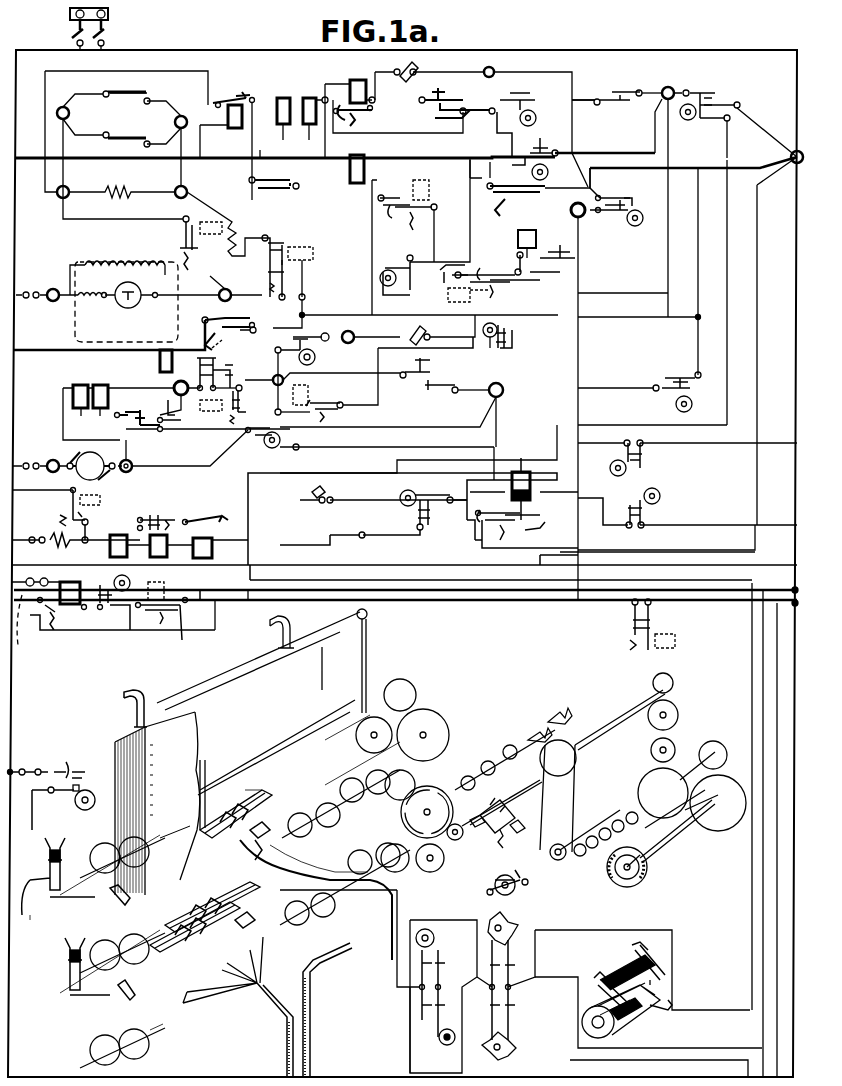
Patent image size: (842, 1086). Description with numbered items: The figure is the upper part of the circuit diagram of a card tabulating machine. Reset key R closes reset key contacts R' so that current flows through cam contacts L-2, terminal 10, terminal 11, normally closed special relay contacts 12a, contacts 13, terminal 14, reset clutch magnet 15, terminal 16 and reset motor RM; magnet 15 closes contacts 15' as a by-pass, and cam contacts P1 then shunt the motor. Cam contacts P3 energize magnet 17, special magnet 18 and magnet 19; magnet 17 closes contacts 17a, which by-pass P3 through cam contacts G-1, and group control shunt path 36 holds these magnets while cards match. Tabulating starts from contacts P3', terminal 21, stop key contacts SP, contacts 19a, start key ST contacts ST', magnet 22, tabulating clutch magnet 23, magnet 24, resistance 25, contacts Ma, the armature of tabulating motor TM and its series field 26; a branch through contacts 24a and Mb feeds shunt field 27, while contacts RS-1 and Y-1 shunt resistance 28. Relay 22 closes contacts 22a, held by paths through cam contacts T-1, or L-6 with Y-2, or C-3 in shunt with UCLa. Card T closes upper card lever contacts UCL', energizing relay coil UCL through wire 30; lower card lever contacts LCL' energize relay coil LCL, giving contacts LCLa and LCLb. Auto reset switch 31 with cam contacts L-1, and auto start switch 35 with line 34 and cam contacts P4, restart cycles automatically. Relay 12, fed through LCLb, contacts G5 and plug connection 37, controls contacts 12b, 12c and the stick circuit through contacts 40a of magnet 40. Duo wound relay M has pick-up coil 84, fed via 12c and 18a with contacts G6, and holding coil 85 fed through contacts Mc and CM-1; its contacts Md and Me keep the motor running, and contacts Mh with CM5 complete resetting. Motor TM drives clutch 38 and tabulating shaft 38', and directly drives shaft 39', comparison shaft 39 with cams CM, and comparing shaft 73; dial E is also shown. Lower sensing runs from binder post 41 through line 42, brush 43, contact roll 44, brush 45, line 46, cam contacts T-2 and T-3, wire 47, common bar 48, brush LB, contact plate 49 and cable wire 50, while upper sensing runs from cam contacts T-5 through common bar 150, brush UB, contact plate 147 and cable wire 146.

The contacts Y-1 is at (140, 100).
The contacts RS-1 is at (140, 118).
The resistance 28 is at (118, 186).
The resistance 25 is at (240, 232).
The duo wound relay M is at (195, 210).
The special normally closed relay contacts Mb is at (183, 247).
The magnet 24 is at (230, 124).
The contacts 24a is at (222, 98).
The special relay coil LCL is at (358, 377).
The tabulating clutch magnet 23 is at (300, 120).
The magnet 22 is at (365, 85).
The armature contacts 22a is at (345, 122).
The auto start switch 35 is at (410, 62).
The start key ST is at (447, 96).
The start key contacts ST' is at (445, 117).
The cam contacts L-6 is at (510, 103).
The cam contacts T-1 is at (525, 145).
The lower card lever contacts LCL' is at (307, 594).
The contacts Y-2 is at (610, 92).
The terminal 21 is at (668, 88).
The contacts P3' is at (714, 97).
The cam contacts P3 is at (738, 130).
The cam contacts P4 is at (630, 200).
The binder post 41 is at (583, 215).
The line 42 is at (590, 283).
The wire 30 is at (608, 310).
The cam contacts L2 L-2 is at (688, 372).
The comparison cam contacts CM-1 is at (645, 455).
The cam contacts C-6 G6 is at (630, 492).
The special relay coil UCL is at (272, 275).
The upper card lever relay contacts UCLa is at (400, 220).
The line 34 is at (432, 245).
The cam contacts C-3 is at (403, 262).
The contacts 19a is at (440, 280).
The magnet 19 is at (100, 555).
The contacts LCLa is at (485, 285).
The stop key contacts SP is at (548, 280).
The special normally closed relay contacts Ma is at (290, 237).
The contacts Md is at (305, 280).
The relay contacts Mh is at (335, 412).
The shunt field 27 is at (108, 272).
The tabulating motor TM is at (488, 888).
The series field 26 is at (93, 302).
The contacts Me is at (205, 278).
The upper card lever contacts UCL' is at (133, 609).
The cam contacts L1 L-1 is at (290, 343).
The reset clutch magnet 15 is at (111, 402).
The terminal 14 is at (175, 375).
The contacts 13 is at (185, 388).
The terminal 11 is at (276, 378).
The special relay contacts 12a is at (256, 404).
The special relay coil 12 is at (205, 418).
The contacts 15' is at (180, 427).
The reset motor RM is at (91, 466).
The terminal 16 is at (132, 460).
The cam contacts P1 is at (280, 438).
The contacts 12c is at (60, 520).
The special magnet 18 is at (175, 545).
The magnet 17 is at (212, 552).
The contacts 18a is at (150, 510).
The contacts 17a is at (232, 502).
The auto reset switch 31 is at (400, 330).
The reset key R is at (425, 357).
The reset key contacts R' is at (439, 394).
The comparison cam contacts CM-5 CM5 is at (492, 350).
The terminal 10 is at (502, 385).
The holding coil 85 is at (518, 470).
The contacts Mc is at (498, 526).
The pick-up coil 84 is at (548, 525).
The cam contacts C-1 G-1 is at (428, 525).
The group control shunt path 36 is at (338, 565).
The contacts 12b is at (55, 625).
The contacts C-5 G5 is at (128, 615).
The contacts LCLb is at (184, 608).
The special plug connection 37 is at (23, 632).
The special relay contacts 40a is at (650, 612).
The magnet 40 is at (675, 645).
The record card T is at (115, 752).
The cam contacts T-S T-5 is at (70, 752).
The upper analyzing brushes UB is at (290, 795).
The common bar of the upper analyzer 150 is at (250, 790).
The contact plate 147 is at (330, 800).
The cable wire 146 is at (258, 865).
The lower brush LB is at (258, 905).
The common contact bar of the lower analyzer 48 is at (195, 910).
The contact plate 49 is at (238, 950).
The cable wire 50 is at (266, 968).
The tabulating clutch 38 is at (513, 749).
The tabulating clutch shaft 38' is at (494, 822).
The comparison cams CM is at (615, 805).
The dial E is at (612, 880).
The comparing shaft 73 is at (672, 840).
The motor driven shaft 39' is at (624, 711).
The comparison shaft 39 is at (692, 765).
The wire 47 is at (395, 945).
The cam contacts T-2 is at (440, 958).
The cam contacts T-3 is at (425, 1020).
The line 46 is at (510, 1065).
The contact roll 44 is at (628, 1020).
The brush 45 is at (635, 965).
The brush 43 is at (660, 1020).